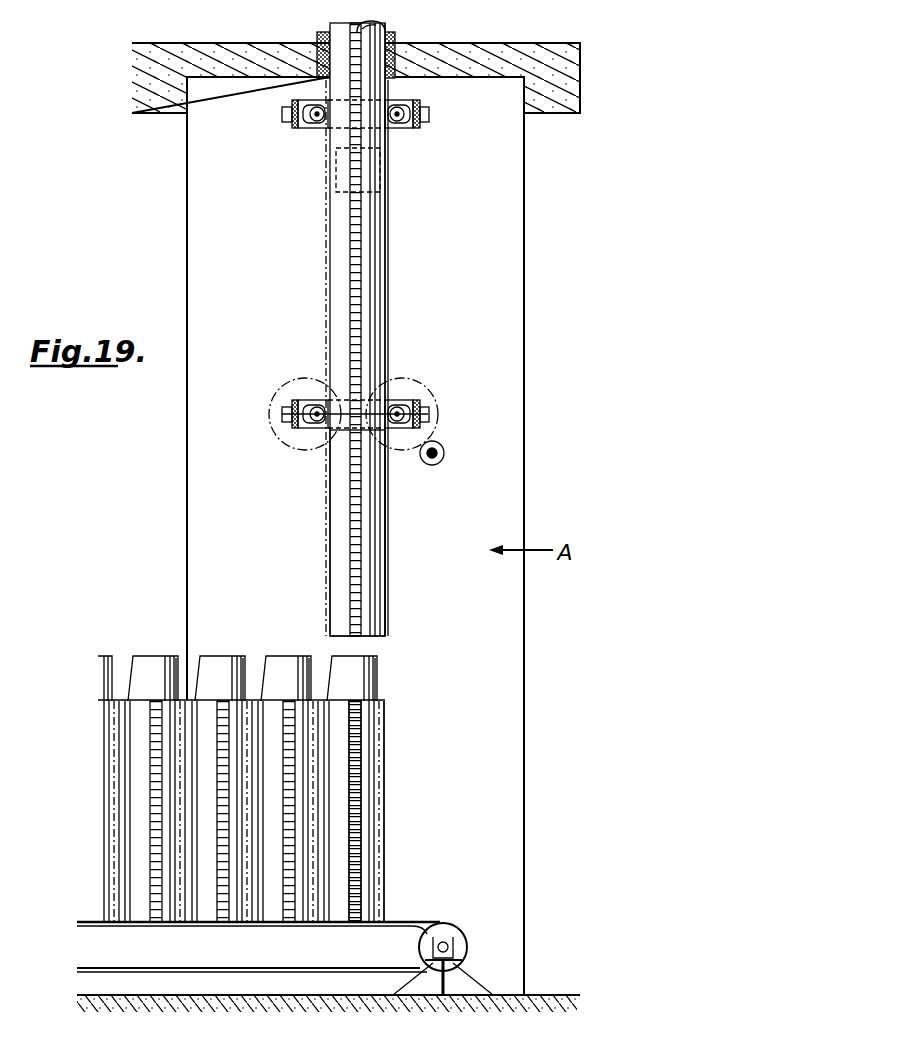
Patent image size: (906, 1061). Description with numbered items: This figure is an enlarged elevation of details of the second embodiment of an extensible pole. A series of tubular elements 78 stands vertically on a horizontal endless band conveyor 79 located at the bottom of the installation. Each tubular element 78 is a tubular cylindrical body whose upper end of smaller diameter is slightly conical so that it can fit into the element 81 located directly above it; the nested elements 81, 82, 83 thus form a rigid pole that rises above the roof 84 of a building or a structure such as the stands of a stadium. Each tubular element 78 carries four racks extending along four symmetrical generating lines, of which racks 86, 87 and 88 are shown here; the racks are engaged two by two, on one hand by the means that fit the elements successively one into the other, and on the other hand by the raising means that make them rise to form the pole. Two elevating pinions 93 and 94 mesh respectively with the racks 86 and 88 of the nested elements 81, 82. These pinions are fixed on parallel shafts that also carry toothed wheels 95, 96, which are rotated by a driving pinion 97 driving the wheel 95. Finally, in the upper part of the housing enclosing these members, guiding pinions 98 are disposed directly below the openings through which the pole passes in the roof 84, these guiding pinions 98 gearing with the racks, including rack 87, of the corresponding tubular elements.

The tubular element 78 is at (298, 792).
The horizontal endless band conveyor 79 is at (443, 923).
The nested element 81 is at (332, 529).
The nested element 82 is at (331, 268).
The nested element 83 is at (338, 34).
The roof 84 is at (207, 55).
The rack 86 is at (389, 569).
The rack 87 is at (356, 503).
The rack 88 is at (324, 585).
The elevating pinion 93 is at (405, 404).
The elevating pinion 94 is at (313, 432).
The toothed wheel 95 is at (411, 372).
The toothed wheel 96 is at (298, 372).
The driving pinion 97 is at (446, 455).
The guiding pinion 98 is at (319, 130).